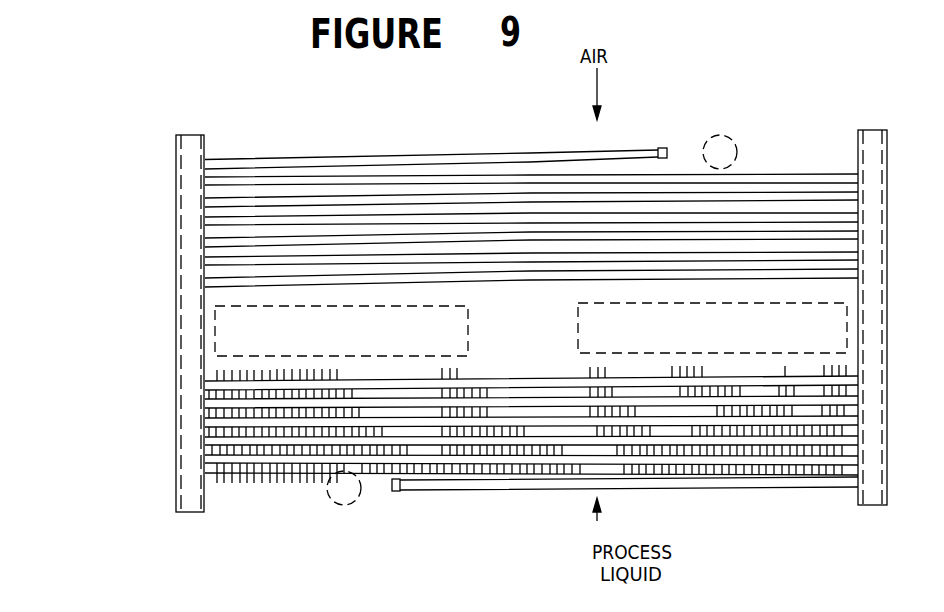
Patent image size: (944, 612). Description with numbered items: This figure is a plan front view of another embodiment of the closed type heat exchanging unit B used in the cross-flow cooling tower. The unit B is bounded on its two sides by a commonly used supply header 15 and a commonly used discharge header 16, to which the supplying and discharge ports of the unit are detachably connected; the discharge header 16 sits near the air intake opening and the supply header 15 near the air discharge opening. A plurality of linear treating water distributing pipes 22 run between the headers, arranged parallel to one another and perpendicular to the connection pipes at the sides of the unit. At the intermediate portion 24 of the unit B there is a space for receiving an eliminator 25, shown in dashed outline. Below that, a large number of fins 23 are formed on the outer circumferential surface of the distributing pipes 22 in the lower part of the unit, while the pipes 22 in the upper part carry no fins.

The supply header 15 is at (878, 150).
The discharge header 16 is at (193, 150).
The treating water distributing pipe 22 is at (325, 205).
The fin 23 is at (455, 374).
The intermediate portion 24 is at (220, 363).
The eliminator 25 is at (233, 330).
The closed type heat exchanging unit B is at (506, 191).